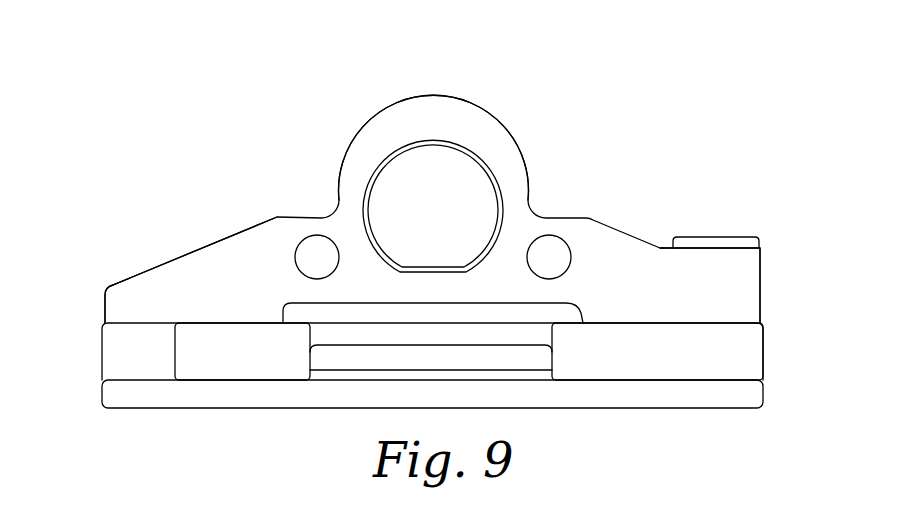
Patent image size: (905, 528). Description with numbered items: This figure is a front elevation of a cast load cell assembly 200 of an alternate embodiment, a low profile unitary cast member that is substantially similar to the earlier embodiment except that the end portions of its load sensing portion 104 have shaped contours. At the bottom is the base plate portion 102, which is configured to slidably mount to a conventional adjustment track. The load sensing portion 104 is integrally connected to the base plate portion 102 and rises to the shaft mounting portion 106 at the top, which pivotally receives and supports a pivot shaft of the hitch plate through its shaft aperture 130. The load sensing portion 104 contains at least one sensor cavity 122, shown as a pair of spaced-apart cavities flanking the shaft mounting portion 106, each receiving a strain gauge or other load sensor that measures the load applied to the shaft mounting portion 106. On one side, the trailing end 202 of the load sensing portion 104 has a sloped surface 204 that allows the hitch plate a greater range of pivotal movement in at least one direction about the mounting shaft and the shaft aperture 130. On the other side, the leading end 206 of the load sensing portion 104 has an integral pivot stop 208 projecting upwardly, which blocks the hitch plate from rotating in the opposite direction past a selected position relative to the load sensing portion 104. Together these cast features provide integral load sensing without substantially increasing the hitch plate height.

The base plate portion 102 is at (157, 372).
The load sensing portion 104 is at (123, 303).
The shaft mounting portion 106 is at (425, 122).
The sensor cavity 122 is at (317, 262).
The shaft aperture 130 is at (470, 183).
The cast load cell assembly 200 is at (437, 239).
The trailing end 202 is at (168, 283).
The sloped surface 204 is at (210, 247).
The leading end 206 is at (747, 278).
The pivot stop 208 is at (731, 240).